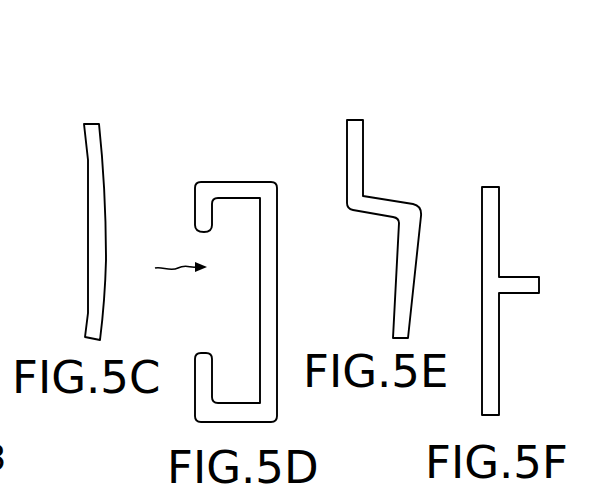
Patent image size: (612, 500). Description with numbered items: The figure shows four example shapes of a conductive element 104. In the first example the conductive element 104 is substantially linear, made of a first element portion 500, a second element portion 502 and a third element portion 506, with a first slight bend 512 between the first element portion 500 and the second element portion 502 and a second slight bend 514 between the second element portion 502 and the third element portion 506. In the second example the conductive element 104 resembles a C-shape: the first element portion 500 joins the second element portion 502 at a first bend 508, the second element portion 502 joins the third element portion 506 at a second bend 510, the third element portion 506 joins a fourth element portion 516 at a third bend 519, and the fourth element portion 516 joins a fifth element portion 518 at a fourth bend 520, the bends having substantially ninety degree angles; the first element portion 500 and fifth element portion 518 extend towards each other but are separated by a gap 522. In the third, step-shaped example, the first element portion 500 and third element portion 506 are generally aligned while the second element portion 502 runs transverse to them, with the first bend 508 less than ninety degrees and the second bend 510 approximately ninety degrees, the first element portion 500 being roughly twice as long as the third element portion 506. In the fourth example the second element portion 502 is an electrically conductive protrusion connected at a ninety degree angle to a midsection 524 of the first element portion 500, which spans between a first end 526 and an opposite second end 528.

In FIG. 5C, the conductive element 104 is at (76, 118).
In FIG. 5D, the conductive element 104 is at (218, 165).
In FIG. 5E, the conductive element 104 is at (343, 115).
In FIG. 5F, the conductive element 104 is at (503, 178).
In FIG. 5C, the first element portion 500 is at (84, 143).
In FIG. 5D, the first element portion 500 is at (197, 215).
In FIG. 5E, the first element portion 500 is at (363, 118).
In FIG. 5F, the first element portion 500 is at (490, 232).
In FIG. 5C, the second element portion 502 is at (87, 243).
In FIG. 5D, the second element portion 502 is at (244, 182).
In FIG. 5E, the second element portion 502 is at (418, 260).
In FIG. 5F, the second element portion 502 is at (539, 296).
In FIG. 5C, the third element portion 506 is at (85, 338).
In FIG. 5D, the third element portion 506 is at (268, 302).
In FIG. 5E, the third element portion 506 is at (400, 320).
In FIG. 5D, the first bend 508 is at (195, 183).
In FIG. 5E, the first bend 508 is at (367, 197).
In FIG. 5D, the second bend 510 is at (277, 183).
In FIG. 5E, the second bend 510 is at (400, 222).
In FIG. 5C, the first slight bend 512 is at (88, 162).
In FIG. 5C, the second slight bend 514 is at (87, 315).
In FIG. 5D, the fourth element portion 516 is at (237, 413).
In FIG. 5D, the fifth element portion 518 is at (200, 352).
In FIG. 5D, the third bend 519 is at (283, 420).
In FIG. 5D, the fourth bend 520 is at (190, 420).
In FIG. 5D, the gap 522 is at (161, 267).
In FIG. 5F, the midsection 524 is at (507, 272).
In FIG. 5F, the first end 526 is at (497, 188).
In FIG. 5F, the second end 528 is at (500, 414).